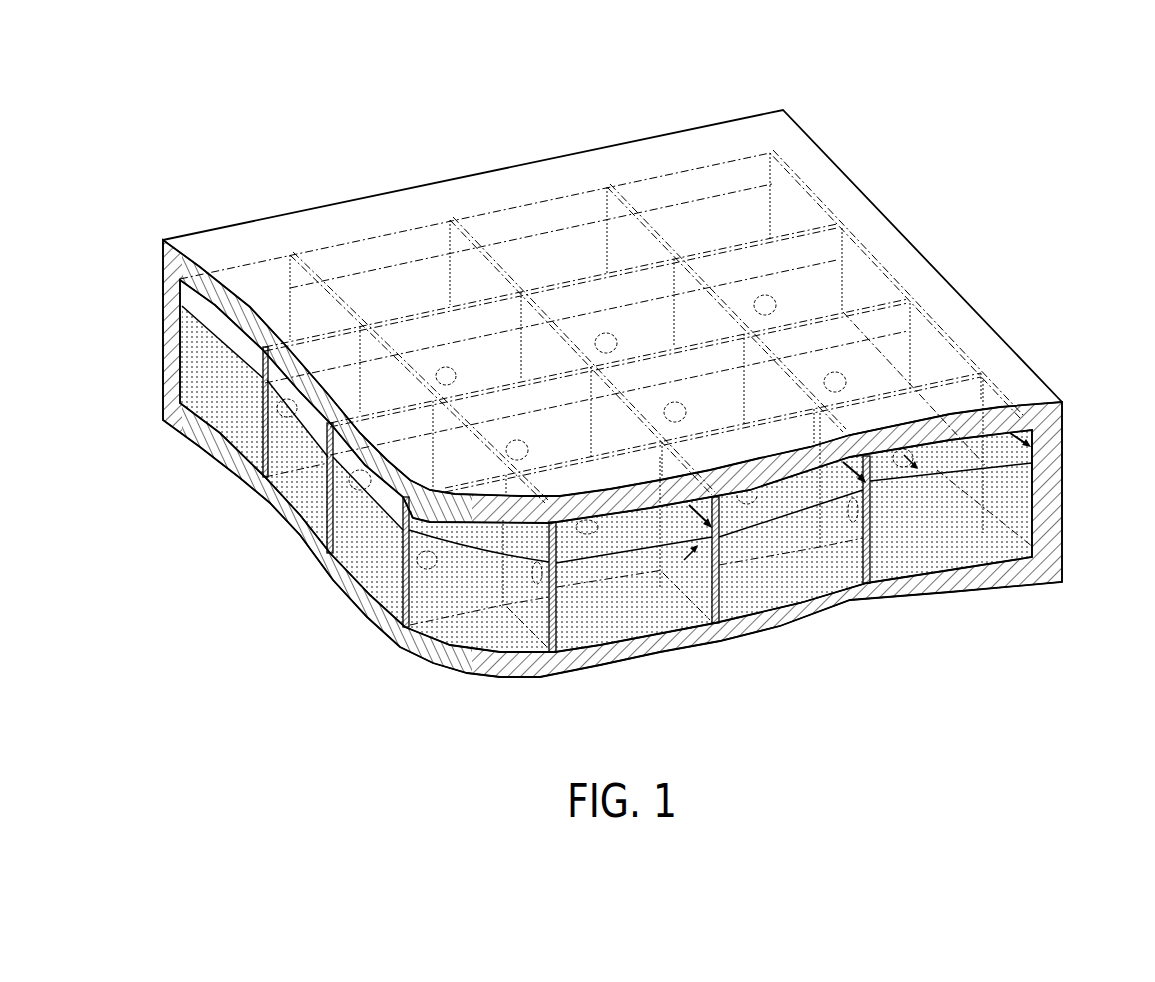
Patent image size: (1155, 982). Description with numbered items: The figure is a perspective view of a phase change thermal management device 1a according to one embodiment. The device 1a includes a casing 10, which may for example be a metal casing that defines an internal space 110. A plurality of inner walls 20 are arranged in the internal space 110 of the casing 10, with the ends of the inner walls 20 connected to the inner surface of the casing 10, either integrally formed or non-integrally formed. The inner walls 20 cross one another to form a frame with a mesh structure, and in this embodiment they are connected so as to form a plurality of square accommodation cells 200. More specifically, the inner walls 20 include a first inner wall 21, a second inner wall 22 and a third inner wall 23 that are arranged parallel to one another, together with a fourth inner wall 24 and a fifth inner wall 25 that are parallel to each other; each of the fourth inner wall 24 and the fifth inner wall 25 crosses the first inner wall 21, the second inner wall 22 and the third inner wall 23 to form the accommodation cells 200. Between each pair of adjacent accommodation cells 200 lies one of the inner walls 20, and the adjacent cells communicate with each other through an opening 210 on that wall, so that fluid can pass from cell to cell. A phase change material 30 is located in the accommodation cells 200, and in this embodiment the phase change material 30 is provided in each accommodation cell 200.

The phase change thermal management device 1a is at (332, 81).
The casing 10 is at (1060, 414).
The internal space 110 is at (797, 181).
The inner walls 20 is at (248, 585).
The first inner wall 21 is at (547, 613).
The second inner wall 22 is at (712, 603).
The third inner wall 23 is at (868, 548).
The fourth inner wall 24 is at (853, 310).
The fifth inner wall 25 is at (927, 385).
The phase change material 30 is at (970, 533).
The accommodation cells 200 is at (1033, 455).
The opening 210 is at (870, 528).